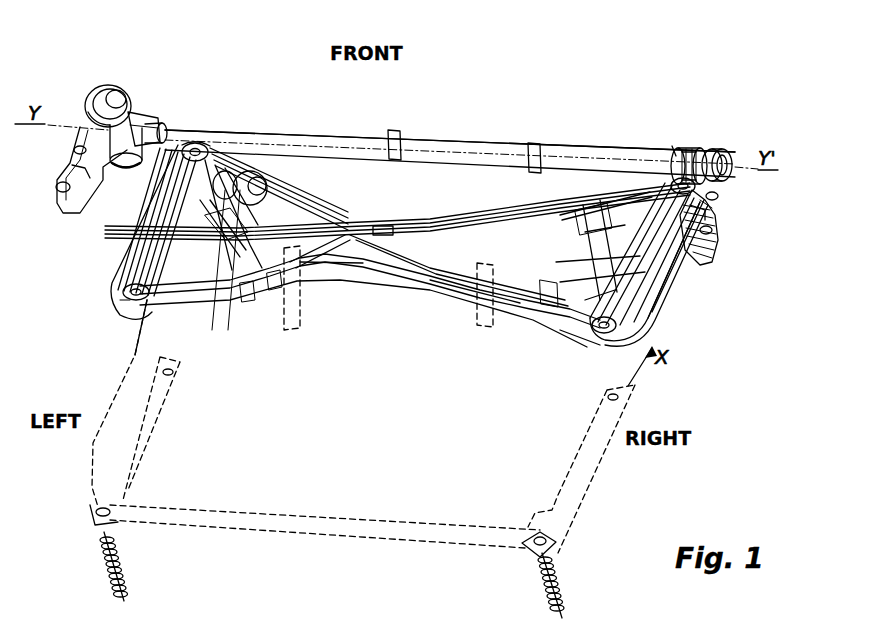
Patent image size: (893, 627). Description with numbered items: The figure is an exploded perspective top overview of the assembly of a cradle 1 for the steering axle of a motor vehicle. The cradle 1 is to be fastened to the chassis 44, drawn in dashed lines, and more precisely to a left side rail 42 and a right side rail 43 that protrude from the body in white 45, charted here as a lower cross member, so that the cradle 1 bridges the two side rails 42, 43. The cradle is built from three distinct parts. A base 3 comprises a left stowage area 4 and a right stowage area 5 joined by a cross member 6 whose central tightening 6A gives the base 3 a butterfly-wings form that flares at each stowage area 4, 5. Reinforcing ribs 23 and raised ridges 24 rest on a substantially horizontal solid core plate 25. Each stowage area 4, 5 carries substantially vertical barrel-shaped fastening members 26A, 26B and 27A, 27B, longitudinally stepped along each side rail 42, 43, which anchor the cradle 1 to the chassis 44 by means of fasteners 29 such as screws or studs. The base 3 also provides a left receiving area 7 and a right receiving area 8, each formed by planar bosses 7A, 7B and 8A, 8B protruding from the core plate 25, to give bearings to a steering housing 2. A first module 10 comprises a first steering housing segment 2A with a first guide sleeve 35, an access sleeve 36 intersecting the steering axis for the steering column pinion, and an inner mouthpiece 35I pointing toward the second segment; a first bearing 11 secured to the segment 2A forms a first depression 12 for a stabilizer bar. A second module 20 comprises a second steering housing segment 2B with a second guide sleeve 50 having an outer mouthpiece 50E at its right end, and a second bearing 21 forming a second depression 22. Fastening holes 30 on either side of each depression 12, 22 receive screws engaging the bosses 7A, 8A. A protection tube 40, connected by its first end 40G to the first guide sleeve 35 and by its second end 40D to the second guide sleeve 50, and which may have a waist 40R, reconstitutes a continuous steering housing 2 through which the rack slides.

The cradle 1 is at (548, 84).
The steering housing 2 is at (493, 133).
The first steering housing segment 2A is at (150, 122).
The second steering housing segment 2B is at (690, 148).
The base 3 is at (259, 290).
The left stowage area 4 is at (125, 304).
The right stowage area 5 is at (672, 300).
The cross member 6 is at (355, 285).
The central tightening 6A is at (404, 288).
The left receiving area 7 is at (197, 252).
The boss 7A is at (233, 300).
The boss 7B is at (255, 172).
The right receiving area 8 is at (573, 284).
The boss 8A is at (568, 310).
The boss 8B is at (605, 215).
The first module 10 is at (391, 136).
The first bearing 11 is at (92, 196).
The first depression 12 is at (70, 171).
The second module 20 is at (693, 176).
The second bearing 21 is at (705, 255).
The second depression 22 is at (706, 207).
The reinforcing ribs 23 is at (330, 206).
The raised ridges 24 is at (300, 183).
The core plate 25 is at (298, 302).
The fastening member 26A is at (120, 287).
The fastening member 26B is at (205, 146).
The fastening member 27A is at (620, 325).
The fastening member 27B is at (672, 180).
The fasteners 29 is at (124, 560).
The fastening holes 30 is at (74, 149).
The first guide sleeve 35 is at (150, 122).
The inner mouthpiece 35I is at (167, 136).
The access sleeve 36 is at (124, 88).
The protection tube 40 is at (435, 140).
The second end 40D is at (675, 146).
The first end 40G is at (390, 139).
The waist 40R is at (533, 140).
The left side rail 42 is at (150, 442).
The right side rail 43 is at (568, 467).
The chassis 44 is at (562, 542).
The body in white 45 is at (330, 540).
The second guide sleeve 50 is at (690, 148).
The outer mouthpiece 50E is at (735, 152).